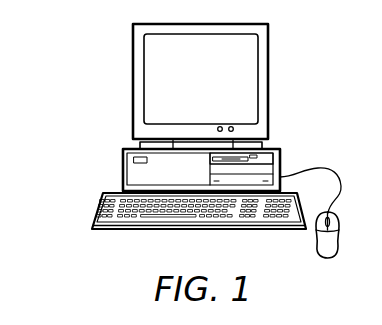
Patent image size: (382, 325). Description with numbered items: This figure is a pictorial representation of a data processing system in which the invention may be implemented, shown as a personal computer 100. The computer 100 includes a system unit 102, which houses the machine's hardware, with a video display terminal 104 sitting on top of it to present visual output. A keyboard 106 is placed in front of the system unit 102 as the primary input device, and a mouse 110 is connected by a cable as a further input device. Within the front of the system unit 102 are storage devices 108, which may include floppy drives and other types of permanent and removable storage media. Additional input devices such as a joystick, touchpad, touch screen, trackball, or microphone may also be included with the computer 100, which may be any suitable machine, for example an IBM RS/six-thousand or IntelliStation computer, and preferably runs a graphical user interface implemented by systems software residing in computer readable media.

The computer 100 is at (75, 68).
The system unit 102 is at (123, 164).
The video display terminal 104 is at (268, 83).
The keyboard 106 is at (120, 231).
The storage devices 108 is at (278, 164).
The mouse 110 is at (326, 258).